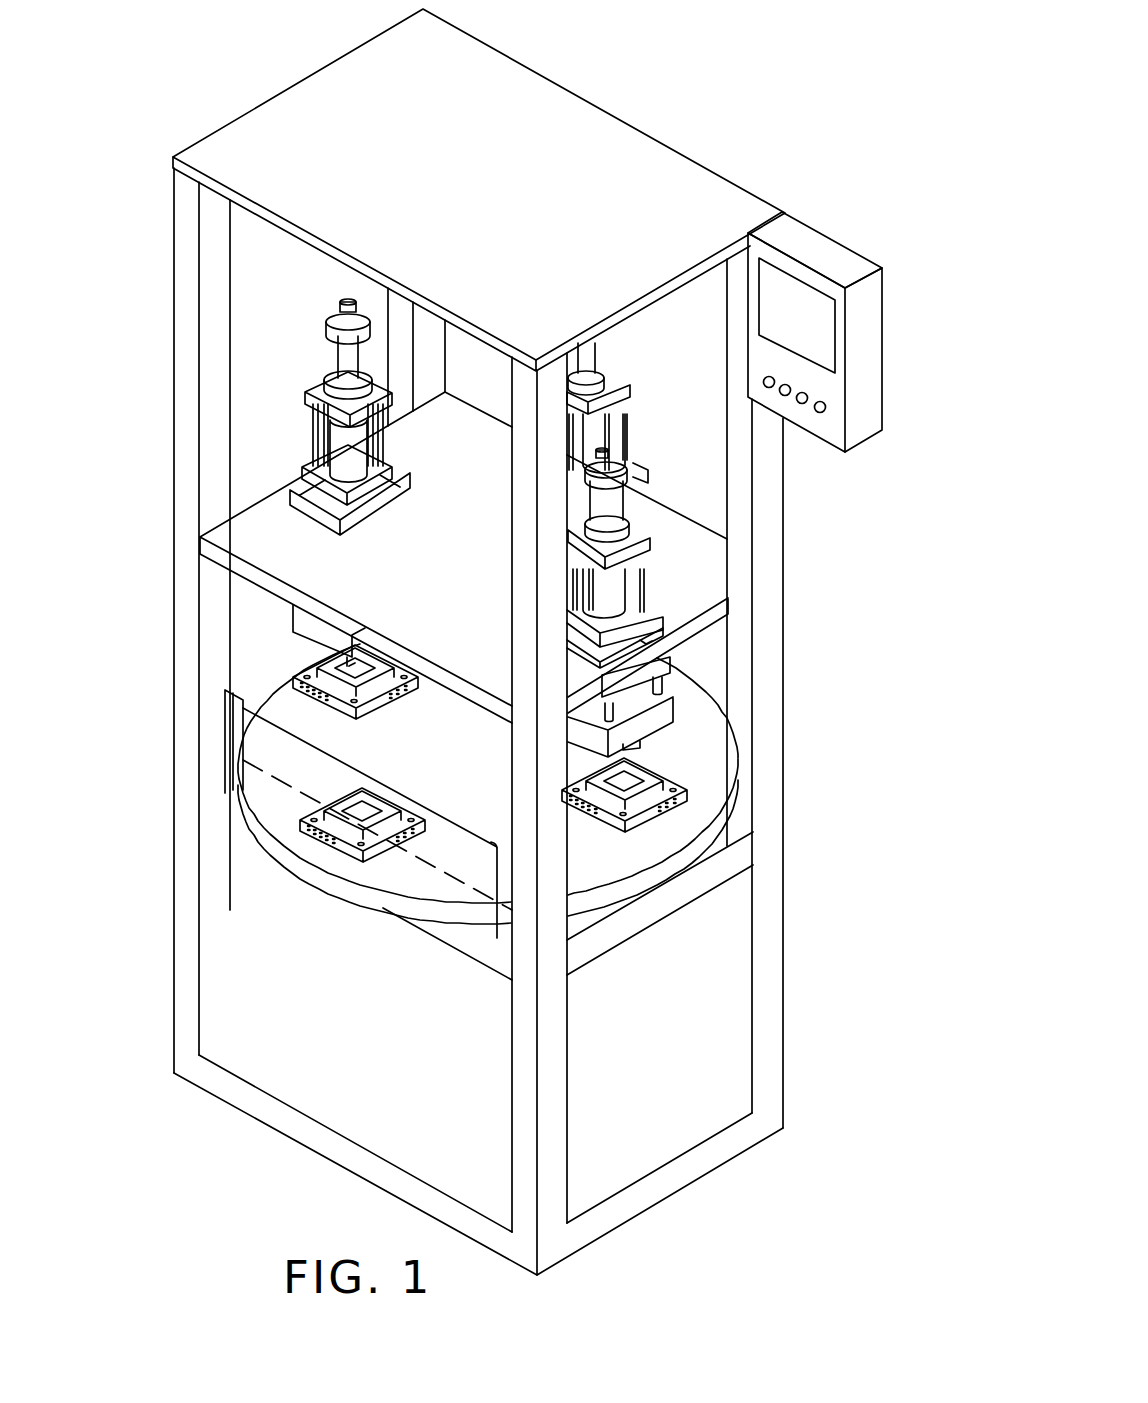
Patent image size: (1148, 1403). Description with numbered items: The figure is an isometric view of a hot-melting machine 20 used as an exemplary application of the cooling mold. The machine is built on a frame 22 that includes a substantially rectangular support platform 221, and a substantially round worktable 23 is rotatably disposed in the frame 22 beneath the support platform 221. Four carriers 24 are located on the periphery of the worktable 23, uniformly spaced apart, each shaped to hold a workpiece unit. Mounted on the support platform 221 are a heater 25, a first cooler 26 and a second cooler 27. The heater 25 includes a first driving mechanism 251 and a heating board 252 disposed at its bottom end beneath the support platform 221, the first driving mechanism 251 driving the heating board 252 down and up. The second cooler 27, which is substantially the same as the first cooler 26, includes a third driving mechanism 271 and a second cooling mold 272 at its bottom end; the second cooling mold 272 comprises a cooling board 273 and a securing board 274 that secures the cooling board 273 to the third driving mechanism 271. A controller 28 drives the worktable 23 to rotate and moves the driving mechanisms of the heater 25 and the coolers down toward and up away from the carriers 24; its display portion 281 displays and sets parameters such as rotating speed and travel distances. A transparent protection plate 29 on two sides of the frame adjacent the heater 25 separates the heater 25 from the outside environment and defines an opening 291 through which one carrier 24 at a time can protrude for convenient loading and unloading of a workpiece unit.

The hot-melting machine 20 is at (571, 62).
The frame 22 is at (192, 648).
The support platform 221 is at (250, 537).
The worktable 23 is at (275, 818).
The carriers 24 is at (368, 812).
The heater 25 is at (312, 335).
The first driving mechanism 251 is at (340, 435).
The heating board 252 is at (290, 632).
The first cooler 26 is at (630, 368).
The second cooler 27 is at (652, 578).
The third driving mechanism 271 is at (677, 630).
The second cooling mold 272 is at (872, 702).
The cooling board 273 is at (668, 727).
The securing board 274 is at (670, 716).
The controller 28 is at (862, 412).
The display portion 281 is at (804, 300).
The protection plate 29 is at (215, 750).
The opening 291 is at (228, 732).